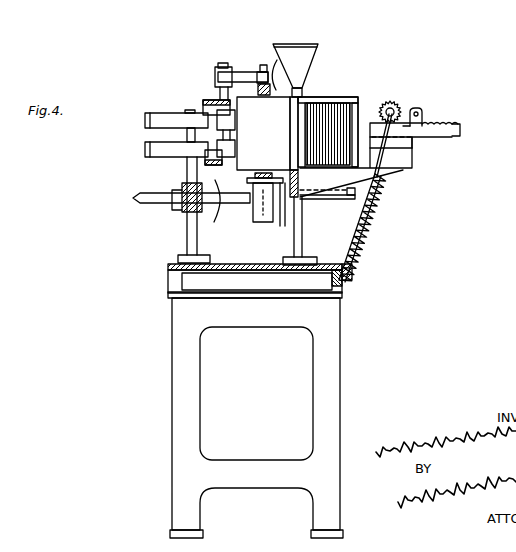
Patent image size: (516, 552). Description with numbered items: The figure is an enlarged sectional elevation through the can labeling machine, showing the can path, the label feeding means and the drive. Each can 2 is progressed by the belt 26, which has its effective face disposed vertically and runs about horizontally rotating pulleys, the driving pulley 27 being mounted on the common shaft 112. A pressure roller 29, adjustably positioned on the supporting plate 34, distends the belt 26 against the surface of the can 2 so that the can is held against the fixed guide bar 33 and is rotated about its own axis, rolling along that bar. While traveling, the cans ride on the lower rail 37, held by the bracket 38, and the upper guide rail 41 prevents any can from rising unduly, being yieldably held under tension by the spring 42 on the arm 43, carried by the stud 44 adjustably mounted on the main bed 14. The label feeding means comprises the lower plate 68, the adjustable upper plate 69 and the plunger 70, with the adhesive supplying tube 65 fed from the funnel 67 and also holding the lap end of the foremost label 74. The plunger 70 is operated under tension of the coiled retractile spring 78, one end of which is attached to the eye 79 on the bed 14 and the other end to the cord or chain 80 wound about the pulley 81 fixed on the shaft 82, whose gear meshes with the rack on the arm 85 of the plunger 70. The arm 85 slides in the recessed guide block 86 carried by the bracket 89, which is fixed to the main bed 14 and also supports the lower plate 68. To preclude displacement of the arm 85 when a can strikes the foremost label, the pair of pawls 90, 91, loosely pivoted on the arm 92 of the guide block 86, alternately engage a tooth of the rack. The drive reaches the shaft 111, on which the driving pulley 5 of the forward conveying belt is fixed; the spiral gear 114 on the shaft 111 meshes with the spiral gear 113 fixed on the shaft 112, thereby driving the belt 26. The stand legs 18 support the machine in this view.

The can 2 is at (263, 133).
The driving pulley 5 is at (264, 216).
The main bed 14 is at (259, 316).
The stand legs 18 is at (176, 400).
The belt 26 is at (147, 142).
The pulley 27 is at (162, 150).
The pressure roller 29 is at (219, 132).
The guide bar 33 is at (307, 199).
The supporting plate 34 is at (218, 185).
The lower rail 37 is at (248, 218).
The bracket 38 is at (283, 218).
The upper guide rail 41 is at (270, 82).
The spring 42 is at (258, 88).
The arm 43 is at (243, 71).
The stud 44 is at (226, 63).
The tube 65 is at (295, 138).
The funnel 67 is at (299, 50).
The lower plate 68 is at (333, 172).
The upper plate 69 is at (357, 97).
The plunger 70 is at (360, 115).
The foremost label 74 is at (337, 105).
The coiled retractile spring 78 is at (368, 240).
The eye 79 is at (352, 283).
The cord or chain 80 is at (412, 148).
The pulley 81 is at (402, 100).
The shaft 82 is at (390, 101).
The arm 85 is at (459, 125).
The guide block 86 is at (413, 164).
The bracket 89 is at (392, 178).
The pawl 90 is at (417, 107).
The pawl 91 is at (419, 123).
The arm 92 is at (428, 121).
The shaft 111 is at (148, 195).
The shaft 112 is at (190, 108).
The spiral gear 113 is at (178, 207).
The spiral gear 114 is at (204, 212).